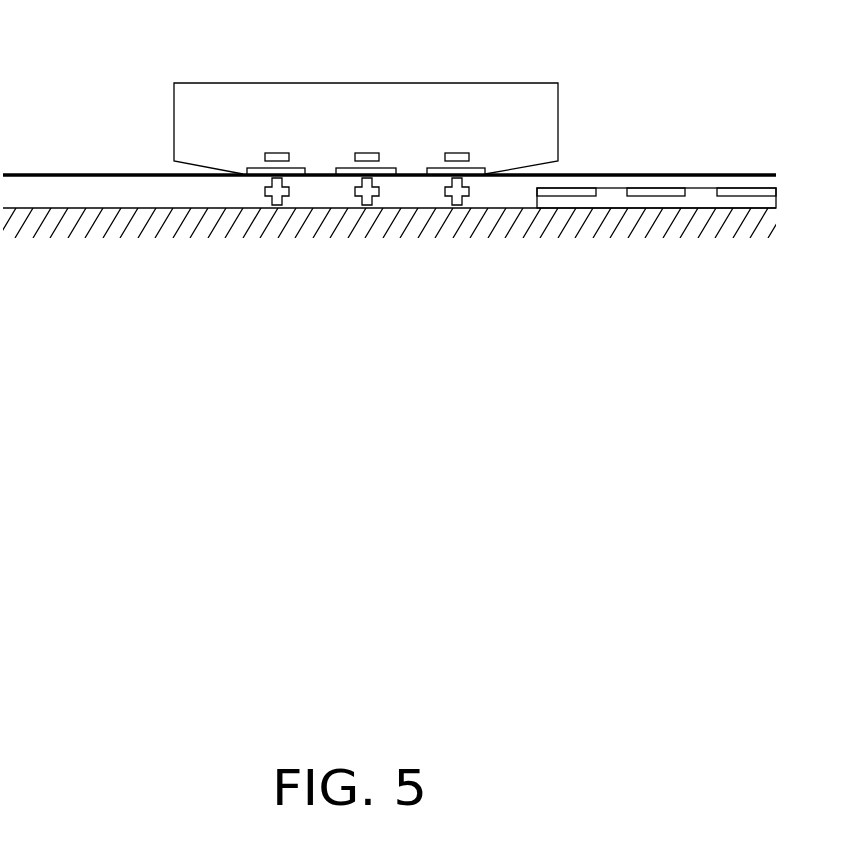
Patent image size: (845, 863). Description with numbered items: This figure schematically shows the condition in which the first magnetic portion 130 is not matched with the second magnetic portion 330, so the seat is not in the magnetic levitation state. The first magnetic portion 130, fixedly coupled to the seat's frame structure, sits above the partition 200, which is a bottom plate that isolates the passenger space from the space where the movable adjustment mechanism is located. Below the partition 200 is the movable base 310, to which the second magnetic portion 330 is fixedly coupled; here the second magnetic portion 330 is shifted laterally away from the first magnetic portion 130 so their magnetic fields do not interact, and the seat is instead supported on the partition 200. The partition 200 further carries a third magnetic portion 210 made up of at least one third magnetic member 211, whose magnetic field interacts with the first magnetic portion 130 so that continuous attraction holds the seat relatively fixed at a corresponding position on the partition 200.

The first magnetic portion 130 is at (303, 122).
The partition 200 is at (160, 175).
The third magnetic portion 210 is at (352, 210).
The third magnetic member 211 is at (453, 198).
The movable base 310 is at (708, 200).
The second magnetic portion 330 is at (721, 169).